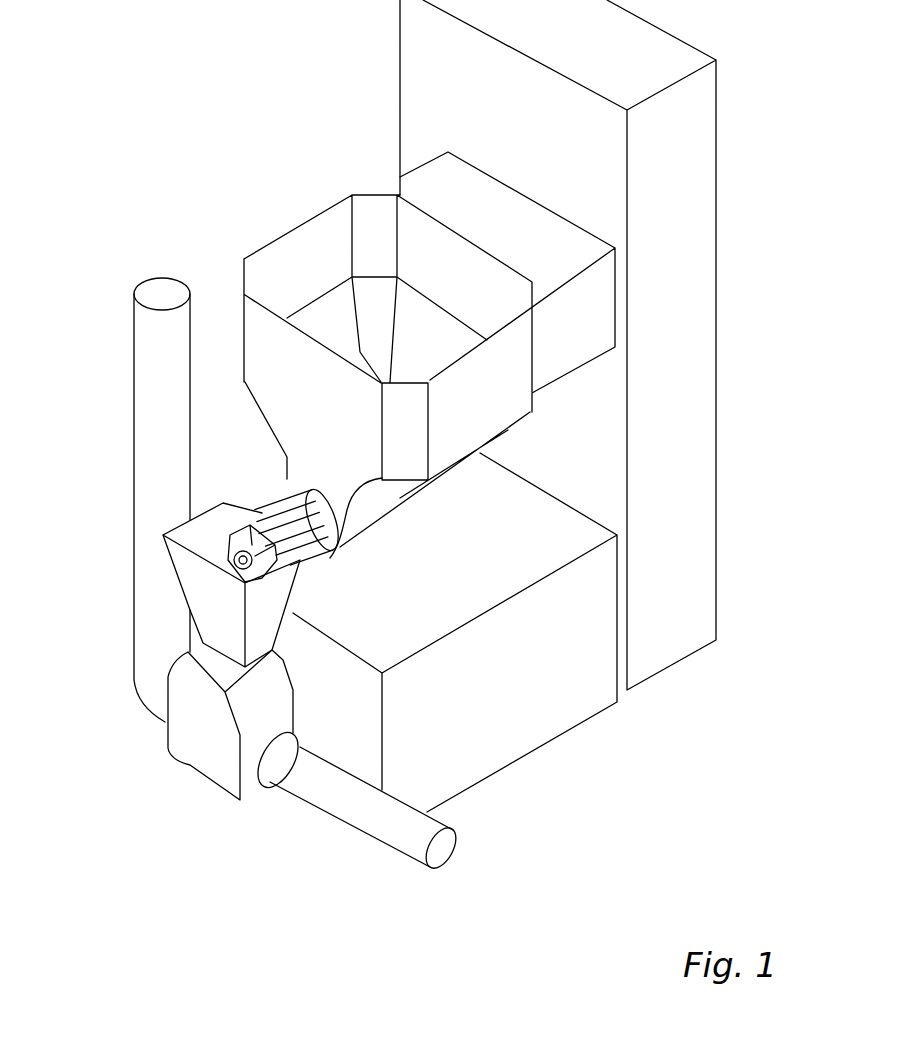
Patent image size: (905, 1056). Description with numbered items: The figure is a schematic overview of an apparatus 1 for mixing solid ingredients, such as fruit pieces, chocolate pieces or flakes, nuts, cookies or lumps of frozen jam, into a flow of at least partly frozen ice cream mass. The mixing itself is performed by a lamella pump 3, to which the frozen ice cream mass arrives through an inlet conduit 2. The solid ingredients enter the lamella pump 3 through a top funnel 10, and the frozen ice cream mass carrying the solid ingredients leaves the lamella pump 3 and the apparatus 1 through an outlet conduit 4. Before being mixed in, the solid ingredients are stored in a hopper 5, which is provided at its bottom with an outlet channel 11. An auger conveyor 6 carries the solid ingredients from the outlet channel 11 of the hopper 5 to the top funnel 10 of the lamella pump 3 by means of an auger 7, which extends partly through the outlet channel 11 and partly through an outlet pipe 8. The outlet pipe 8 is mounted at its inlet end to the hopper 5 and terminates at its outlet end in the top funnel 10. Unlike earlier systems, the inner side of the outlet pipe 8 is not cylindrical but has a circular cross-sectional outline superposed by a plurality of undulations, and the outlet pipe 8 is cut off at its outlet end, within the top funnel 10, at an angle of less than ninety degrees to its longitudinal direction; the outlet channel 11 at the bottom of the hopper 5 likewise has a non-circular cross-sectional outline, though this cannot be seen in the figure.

The apparatus 1 is at (226, 122).
The inlet conduit 2 is at (407, 830).
The lamella pump 3 is at (210, 750).
The outlet conduit 4 is at (157, 402).
The hopper 5 is at (330, 243).
The auger conveyor 6 is at (230, 530).
The auger 7 is at (237, 553).
The outlet pipe 8 is at (263, 505).
The top funnel 10 is at (230, 637).
The outlet channel 11 is at (393, 490).